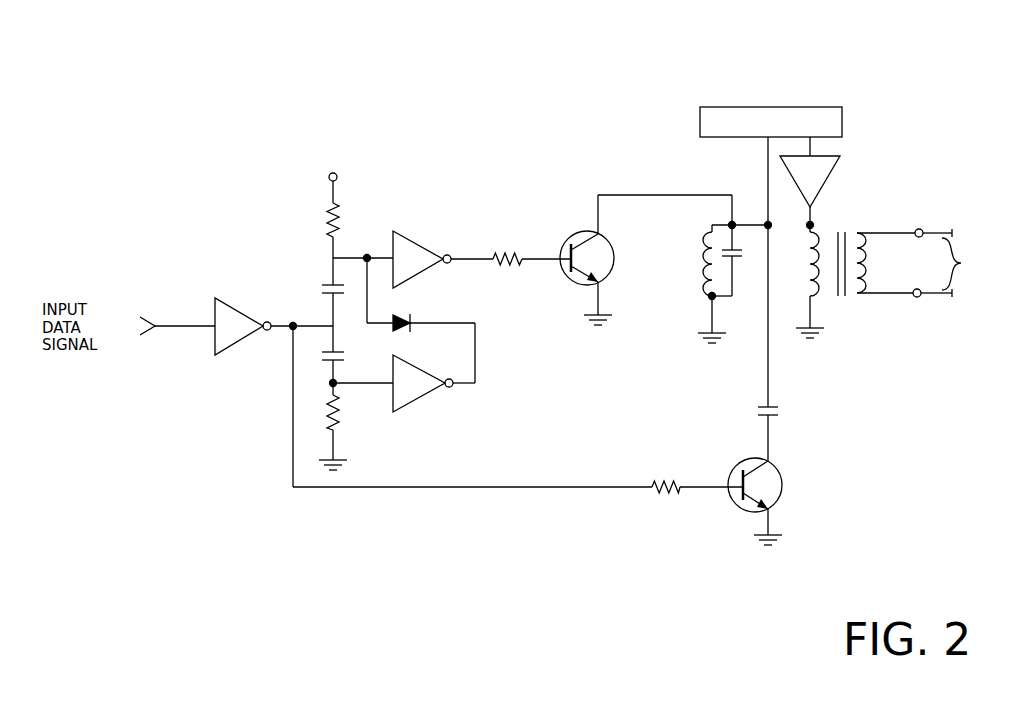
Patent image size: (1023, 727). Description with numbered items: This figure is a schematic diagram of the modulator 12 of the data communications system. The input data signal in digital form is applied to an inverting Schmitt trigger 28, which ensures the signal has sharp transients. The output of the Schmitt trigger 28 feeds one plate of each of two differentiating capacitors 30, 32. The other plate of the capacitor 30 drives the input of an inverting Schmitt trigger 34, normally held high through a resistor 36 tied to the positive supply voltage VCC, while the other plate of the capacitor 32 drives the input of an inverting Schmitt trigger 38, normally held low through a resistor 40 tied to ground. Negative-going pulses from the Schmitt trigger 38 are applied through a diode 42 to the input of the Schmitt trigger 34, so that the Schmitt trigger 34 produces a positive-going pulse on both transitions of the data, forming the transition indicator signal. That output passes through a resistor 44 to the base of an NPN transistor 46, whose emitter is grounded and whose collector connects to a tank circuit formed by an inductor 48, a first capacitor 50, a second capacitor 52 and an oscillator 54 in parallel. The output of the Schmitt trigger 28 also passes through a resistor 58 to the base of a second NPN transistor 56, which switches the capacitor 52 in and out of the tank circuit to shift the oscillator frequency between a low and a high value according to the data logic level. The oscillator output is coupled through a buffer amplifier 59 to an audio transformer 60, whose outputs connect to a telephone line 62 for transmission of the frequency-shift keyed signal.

The modulator 12 is at (585, 78).
The inverting Schmitt trigger 28 is at (243, 315).
The differentiating capacitor 30 is at (320, 290).
The differentiating capacitor 32 is at (345, 359).
The inverting Schmitt trigger 34 is at (432, 250).
The resistor 36 is at (338, 222).
The inverting Schmitt trigger 38 is at (432, 395).
The resistor 40 is at (337, 413).
The diode 42 is at (406, 318).
The resistor 44 is at (512, 255).
The NPN transistor 46 is at (588, 232).
The inductor 48 is at (697, 256).
The first capacitor 50 is at (738, 258).
The second capacitor 52 is at (779, 408).
The oscillator 54 is at (843, 122).
The NPN transistor 56 is at (782, 487).
The resistor 58 is at (660, 482).
The buffer amplifier 59 is at (828, 178).
The audio transformer 60 is at (843, 230).
The telephone line 62 is at (926, 263).